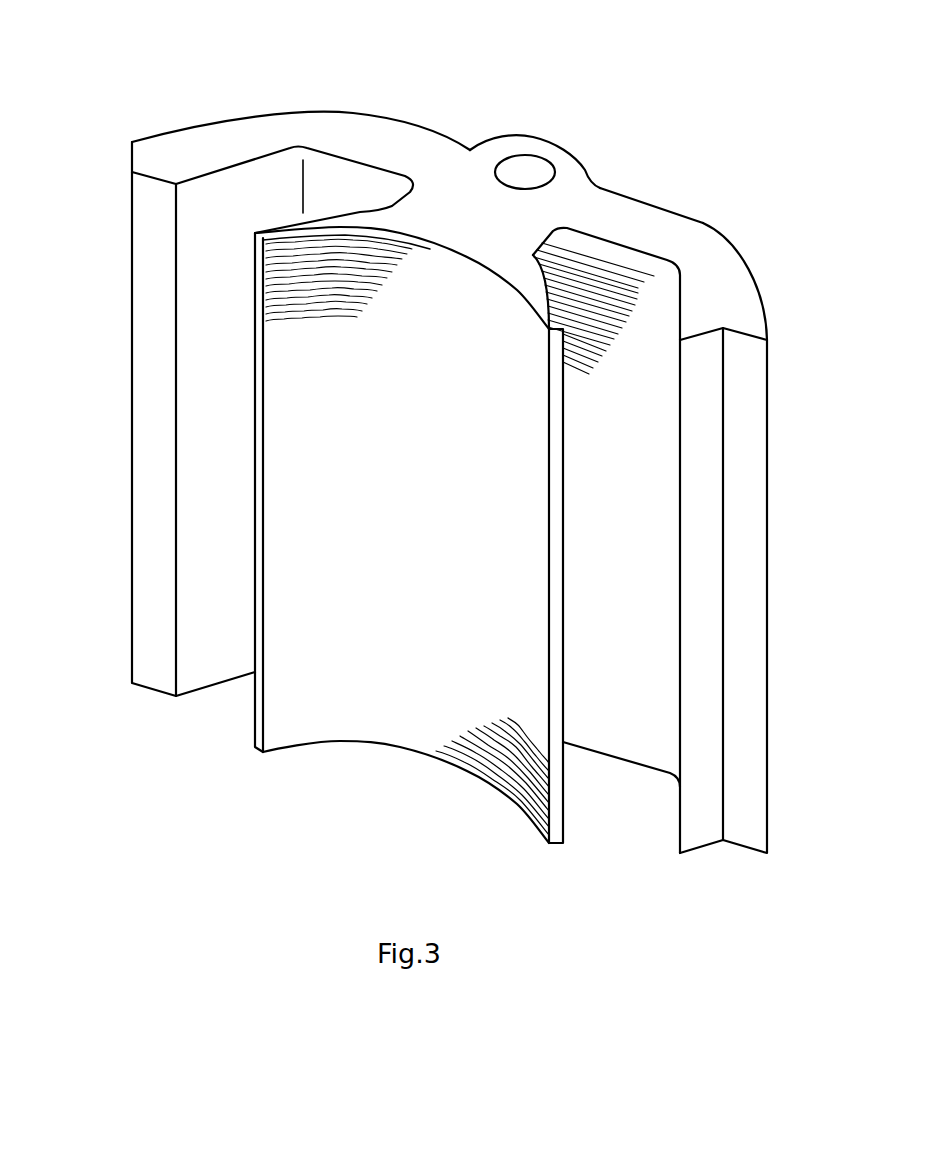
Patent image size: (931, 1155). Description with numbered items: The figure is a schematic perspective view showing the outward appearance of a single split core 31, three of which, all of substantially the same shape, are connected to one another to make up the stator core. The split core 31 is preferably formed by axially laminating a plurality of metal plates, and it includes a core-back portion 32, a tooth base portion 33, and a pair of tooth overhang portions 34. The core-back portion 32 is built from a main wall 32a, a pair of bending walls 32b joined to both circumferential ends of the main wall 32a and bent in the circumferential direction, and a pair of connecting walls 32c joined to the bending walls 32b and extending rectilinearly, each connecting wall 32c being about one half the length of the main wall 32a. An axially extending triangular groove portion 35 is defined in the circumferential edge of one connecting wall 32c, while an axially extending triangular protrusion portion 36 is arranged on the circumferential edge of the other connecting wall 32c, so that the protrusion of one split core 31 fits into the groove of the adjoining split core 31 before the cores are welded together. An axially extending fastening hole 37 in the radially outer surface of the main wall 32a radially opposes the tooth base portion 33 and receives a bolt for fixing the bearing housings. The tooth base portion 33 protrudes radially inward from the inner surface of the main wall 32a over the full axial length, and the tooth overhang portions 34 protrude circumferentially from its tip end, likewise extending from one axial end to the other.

The split core 31 is at (628, 70).
The core-back portion 32 is at (460, 103).
The main wall 32a is at (347, 183).
The bending wall 32b is at (292, 167).
The connecting wall 32c is at (200, 407).
The tooth base portion 33 is at (557, 262).
The tooth overhang portion 34 is at (280, 733).
The triangular groove portion 35 is at (748, 540).
The triangular protrusion portion 36 is at (132, 275).
The fastening hole 37 is at (527, 170).